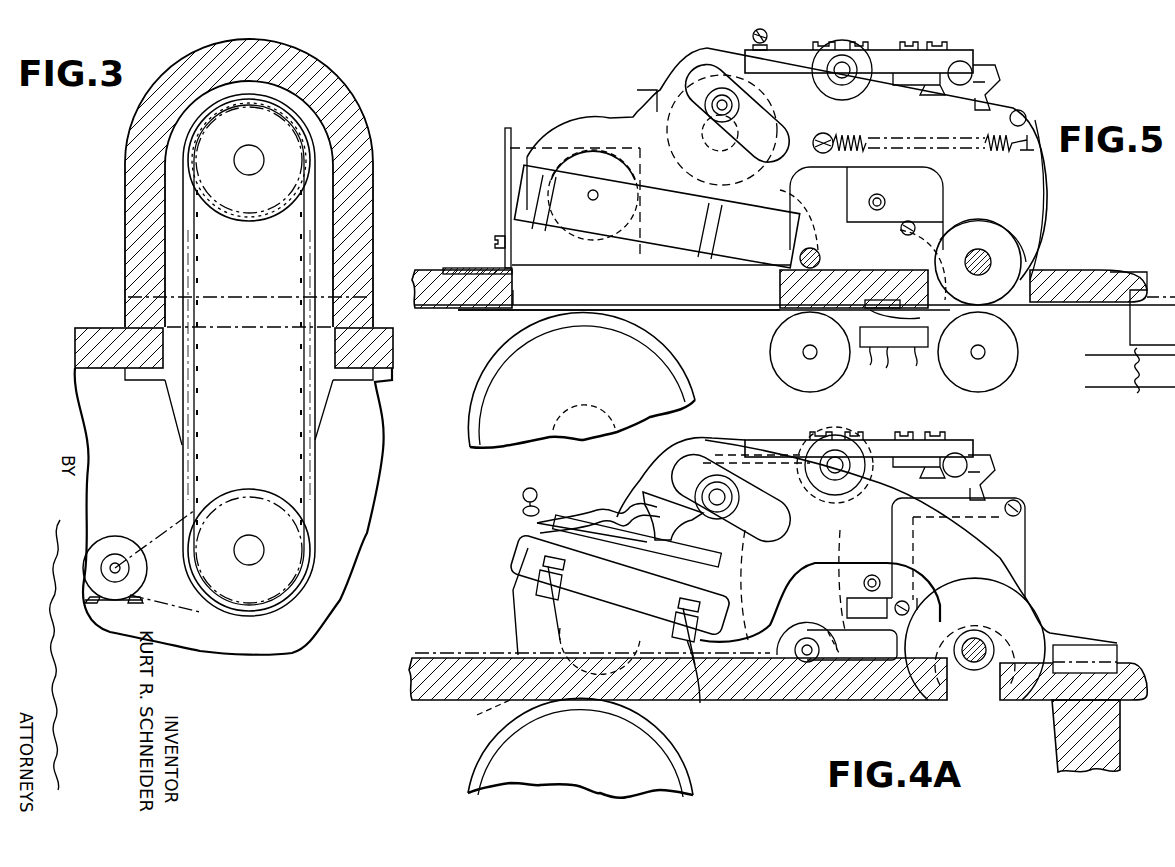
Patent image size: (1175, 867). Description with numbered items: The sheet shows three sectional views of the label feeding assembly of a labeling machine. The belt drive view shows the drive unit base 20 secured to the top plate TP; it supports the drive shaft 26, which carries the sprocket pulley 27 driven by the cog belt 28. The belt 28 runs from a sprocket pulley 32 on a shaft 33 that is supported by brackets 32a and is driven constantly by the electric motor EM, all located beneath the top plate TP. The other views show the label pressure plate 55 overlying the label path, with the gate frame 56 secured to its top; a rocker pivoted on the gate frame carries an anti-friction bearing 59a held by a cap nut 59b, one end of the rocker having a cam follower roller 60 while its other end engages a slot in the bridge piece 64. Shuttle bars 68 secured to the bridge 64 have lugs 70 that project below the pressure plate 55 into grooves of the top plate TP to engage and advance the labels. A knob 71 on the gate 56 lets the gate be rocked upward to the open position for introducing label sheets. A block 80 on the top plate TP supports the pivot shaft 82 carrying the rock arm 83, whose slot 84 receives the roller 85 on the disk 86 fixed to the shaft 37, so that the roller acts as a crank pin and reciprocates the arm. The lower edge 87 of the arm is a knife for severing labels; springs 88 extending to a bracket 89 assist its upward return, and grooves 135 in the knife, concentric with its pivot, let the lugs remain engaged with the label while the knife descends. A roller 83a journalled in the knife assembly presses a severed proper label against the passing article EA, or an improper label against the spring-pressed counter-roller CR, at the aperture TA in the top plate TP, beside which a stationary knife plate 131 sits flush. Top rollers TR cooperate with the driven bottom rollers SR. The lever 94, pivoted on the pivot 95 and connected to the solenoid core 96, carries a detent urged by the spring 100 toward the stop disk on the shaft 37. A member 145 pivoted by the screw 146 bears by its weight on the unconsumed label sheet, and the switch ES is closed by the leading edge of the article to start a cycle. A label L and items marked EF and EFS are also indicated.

In FIG. 3, the drive unit base 20 is at (133, 305).
In FIG. 3, the drive shaft 26 is at (244, 150).
In FIG. 3, the sprocket pulley 27 is at (303, 118).
In FIG. 3, the drive cog belt 28 is at (182, 250).
In FIG. 3, the sprocket pulley 32 is at (358, 135).
In FIG. 3, the brackets 32a is at (172, 385).
In FIG. 3, the shaft 33 is at (268, 530).
In FIG. 5, the shaft 37 is at (768, 112).
In FIG. 4A, the label pressure plate 55 is at (533, 556).
In FIG. 4A, the gate frame 56 is at (815, 550).
In FIG. 4A, the anti-friction bearing 59a is at (788, 573).
In FIG. 4A, the cap nut 59b is at (816, 557).
In FIG. 4A, the cam follower roller 60 is at (837, 642).
In FIG. 4A, the bridge piece 64 is at (555, 525).
In FIG. 4A, the shuttle bars 68 is at (545, 562).
In FIG. 4A, the lugs 70 is at (548, 586).
In FIG. 4A, the knob 71 is at (655, 518).
In FIG. 4A, the block 80 is at (1015, 605).
In FIG. 4A, the pivot shaft 82 is at (988, 645).
In FIG. 5, the rock arm 83 is at (1012, 193).
In FIG. 4A, the rock arm 83 is at (997, 557).
In FIG. 5, the roller 83a is at (580, 158).
In FIG. 4A, the roller 83a is at (592, 626).
In FIG. 4A, the slot 84 is at (683, 475).
In FIG. 4A, the roller 85 is at (730, 497).
In FIG. 5, the disk 86 is at (636, 117).
In FIG. 5, the knife 87 is at (648, 240).
In FIG. 4A, the knife 87 is at (515, 615).
In FIG. 5, the springs 88 is at (880, 145).
In FIG. 5, the bracket 89 is at (1045, 212).
In FIG. 5, the lever 94 is at (962, 58).
In FIG. 4A, the lever 94 is at (960, 445).
In FIG. 5, the pivot 95 is at (842, 75).
In FIG. 4A, the pivot 95 is at (855, 460).
In FIG. 5, the core 96 is at (990, 88).
In FIG. 4A, the core 96 is at (990, 482).
In FIG. 5, the spring 100 is at (752, 36).
In FIG. 5, the stationary knife plate 131 is at (472, 268).
In FIG. 4A, the grooves 135 is at (535, 610).
In FIG. 5, the member 145 is at (505, 186).
In FIG. 5, the pivot screw 146 is at (497, 238).
In FIG. 3, the top plate TP is at (82, 340).
In FIG. 5, the top plate TP is at (425, 282).
In FIG. 4A, the top plate TP is at (430, 670).
In FIG. 5, the layer L is at (546, 268).
In FIG. 4A, the layer L is at (422, 655).
In FIG. 5, the aperture TA is at (513, 288).
In FIG. 4A, the aperture TA is at (476, 722).
In FIG. 5, the passing article EA is at (678, 313).
In FIG. 5, the counter-roller CR is at (660, 372).
In FIG. 4A, the counter-roller CR is at (655, 772).
In FIG. 5, the bottom rollers SR is at (785, 362).
In FIG. 5, the switch ES is at (884, 360).
In FIG. 3, the electric motor EM is at (113, 545).
In FIG. 5, the top rollers TR is at (852, 245).
In FIG. 5, the electric feed EF is at (1155, 360).
In FIG. 5, the electric feed switch EFS is at (1140, 392).